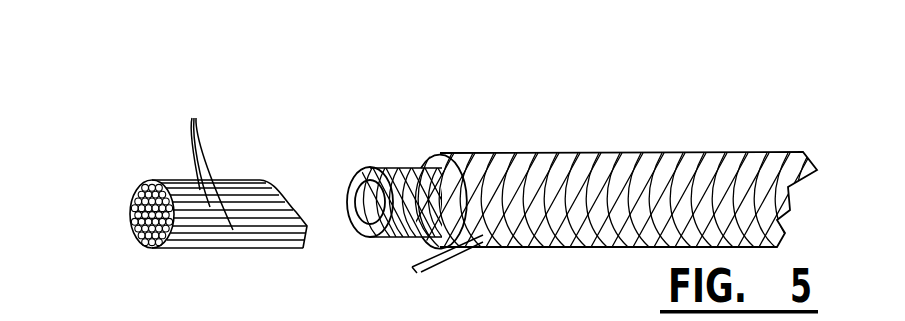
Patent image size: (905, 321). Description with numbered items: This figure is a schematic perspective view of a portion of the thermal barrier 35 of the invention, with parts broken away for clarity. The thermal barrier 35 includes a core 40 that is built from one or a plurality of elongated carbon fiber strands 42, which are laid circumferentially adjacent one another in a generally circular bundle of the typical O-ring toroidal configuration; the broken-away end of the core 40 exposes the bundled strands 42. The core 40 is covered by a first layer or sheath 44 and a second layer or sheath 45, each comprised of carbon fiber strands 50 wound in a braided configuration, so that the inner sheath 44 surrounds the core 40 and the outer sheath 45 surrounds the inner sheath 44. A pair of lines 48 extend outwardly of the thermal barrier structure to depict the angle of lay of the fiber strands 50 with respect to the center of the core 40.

The thermal barrier 35 is at (500, 118).
The core 40 is at (143, 180).
The elongated carbon fiber strands 42 is at (190, 122).
The first layer or sheath 44 is at (393, 166).
The second layer or sheath 45 is at (625, 153).
The pair of lines 48 is at (440, 268).
The carbon fiber strands 50 is at (718, 210).